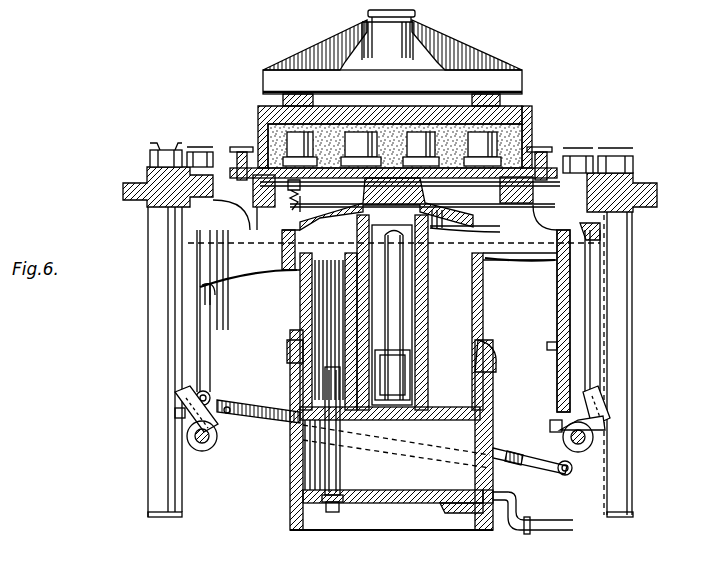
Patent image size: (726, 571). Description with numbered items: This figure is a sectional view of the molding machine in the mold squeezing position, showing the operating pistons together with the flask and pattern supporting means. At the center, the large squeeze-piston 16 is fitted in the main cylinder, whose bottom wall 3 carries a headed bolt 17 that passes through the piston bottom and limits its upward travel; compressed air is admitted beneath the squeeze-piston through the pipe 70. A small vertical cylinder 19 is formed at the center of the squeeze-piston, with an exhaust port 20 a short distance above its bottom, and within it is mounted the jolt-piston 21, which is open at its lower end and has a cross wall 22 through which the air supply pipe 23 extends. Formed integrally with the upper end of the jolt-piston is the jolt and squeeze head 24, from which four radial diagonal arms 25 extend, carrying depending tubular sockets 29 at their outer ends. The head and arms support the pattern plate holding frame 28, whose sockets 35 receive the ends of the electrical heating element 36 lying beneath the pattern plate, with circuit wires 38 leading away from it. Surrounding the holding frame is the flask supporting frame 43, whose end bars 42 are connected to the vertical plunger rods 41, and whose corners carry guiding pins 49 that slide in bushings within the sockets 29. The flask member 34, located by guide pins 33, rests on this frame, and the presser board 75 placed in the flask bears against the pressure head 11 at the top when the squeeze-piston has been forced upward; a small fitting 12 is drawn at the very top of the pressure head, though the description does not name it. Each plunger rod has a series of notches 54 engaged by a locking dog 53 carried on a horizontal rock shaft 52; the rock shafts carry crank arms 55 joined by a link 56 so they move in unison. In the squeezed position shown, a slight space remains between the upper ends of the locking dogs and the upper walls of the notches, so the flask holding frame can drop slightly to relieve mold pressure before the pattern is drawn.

The bottom wall 3 is at (406, 503).
The pressure head 11 is at (266, 74).
The cap 12 is at (416, 16).
The squeeze-piston 16 is at (289, 348).
The headed bolt 17 is at (330, 452).
The cylinder 19 is at (428, 335).
The exhaust port 20 is at (440, 380).
The jolt-piston 21 is at (347, 310).
The cross wall 22 is at (402, 344).
The air supply pipe 23 is at (394, 287).
The jolt and squeeze head 24 is at (281, 254).
The radial diagonal arms 25 is at (262, 274).
The pattern plate holding frame 28 is at (254, 186).
The tubular sockets 29 is at (195, 348).
The guide pins 33 is at (238, 156).
The flask member 34 is at (258, 112).
The sockets 35 is at (298, 206).
The heating element 36 is at (375, 180).
The circuit wires 38 is at (303, 198).
The plunger rods 41 is at (147, 320).
The end bars 42 is at (632, 175).
The flask supporting frame 43 is at (145, 176).
The guiding pin 49 is at (558, 358).
The rock shaft 52 is at (200, 436).
The locking dog 53 is at (180, 398).
The notches 54 is at (175, 418).
The crank arm 55 is at (228, 409).
The link 56 is at (258, 410).
The pipe 70 is at (545, 526).
The presser board 75 is at (282, 100).